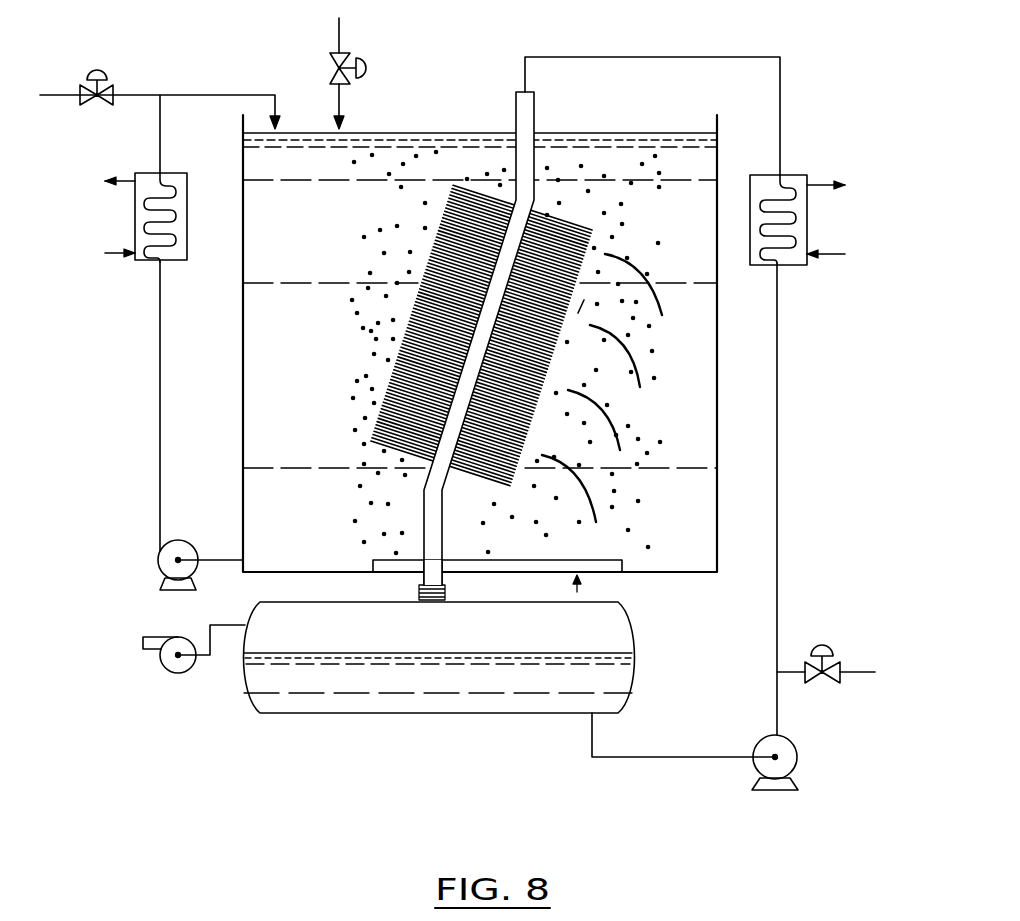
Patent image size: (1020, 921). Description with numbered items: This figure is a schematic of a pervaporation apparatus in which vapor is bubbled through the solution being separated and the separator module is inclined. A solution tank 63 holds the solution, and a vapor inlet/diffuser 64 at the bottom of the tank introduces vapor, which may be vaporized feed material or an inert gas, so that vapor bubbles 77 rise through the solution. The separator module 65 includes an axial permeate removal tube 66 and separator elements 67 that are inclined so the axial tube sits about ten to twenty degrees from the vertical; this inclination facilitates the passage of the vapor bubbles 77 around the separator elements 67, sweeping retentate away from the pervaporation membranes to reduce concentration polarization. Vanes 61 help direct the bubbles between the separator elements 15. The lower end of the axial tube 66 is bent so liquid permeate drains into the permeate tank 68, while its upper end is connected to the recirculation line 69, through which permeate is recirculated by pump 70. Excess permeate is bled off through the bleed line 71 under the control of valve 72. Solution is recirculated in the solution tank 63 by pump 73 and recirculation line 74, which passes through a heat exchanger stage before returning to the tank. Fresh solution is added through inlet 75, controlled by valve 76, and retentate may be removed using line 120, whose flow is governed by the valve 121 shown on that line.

The separator elements 15 is at (572, 237).
The vanes 61 is at (663, 312).
The solution tank 63 is at (680, 572).
The vapor inlet/diffuser 64 is at (598, 561).
The separator module 65 is at (598, 246).
The axial permeate removal tube 66 is at (433, 452).
The separator elements 67 is at (578, 313).
The permeate tank 68 is at (302, 714).
The recirculation line 69 is at (656, 57).
The pump 70 is at (790, 762).
The bleed line 71 is at (788, 674).
The valve 72 is at (826, 645).
The pump 73 is at (168, 557).
The recirculation line 74 is at (216, 93).
The inlet 75 is at (345, 96).
The valve 76 is at (352, 68).
The vapor bubbles 77 is at (365, 375).
The line 120 is at (140, 93).
The valve 121 is at (92, 68).